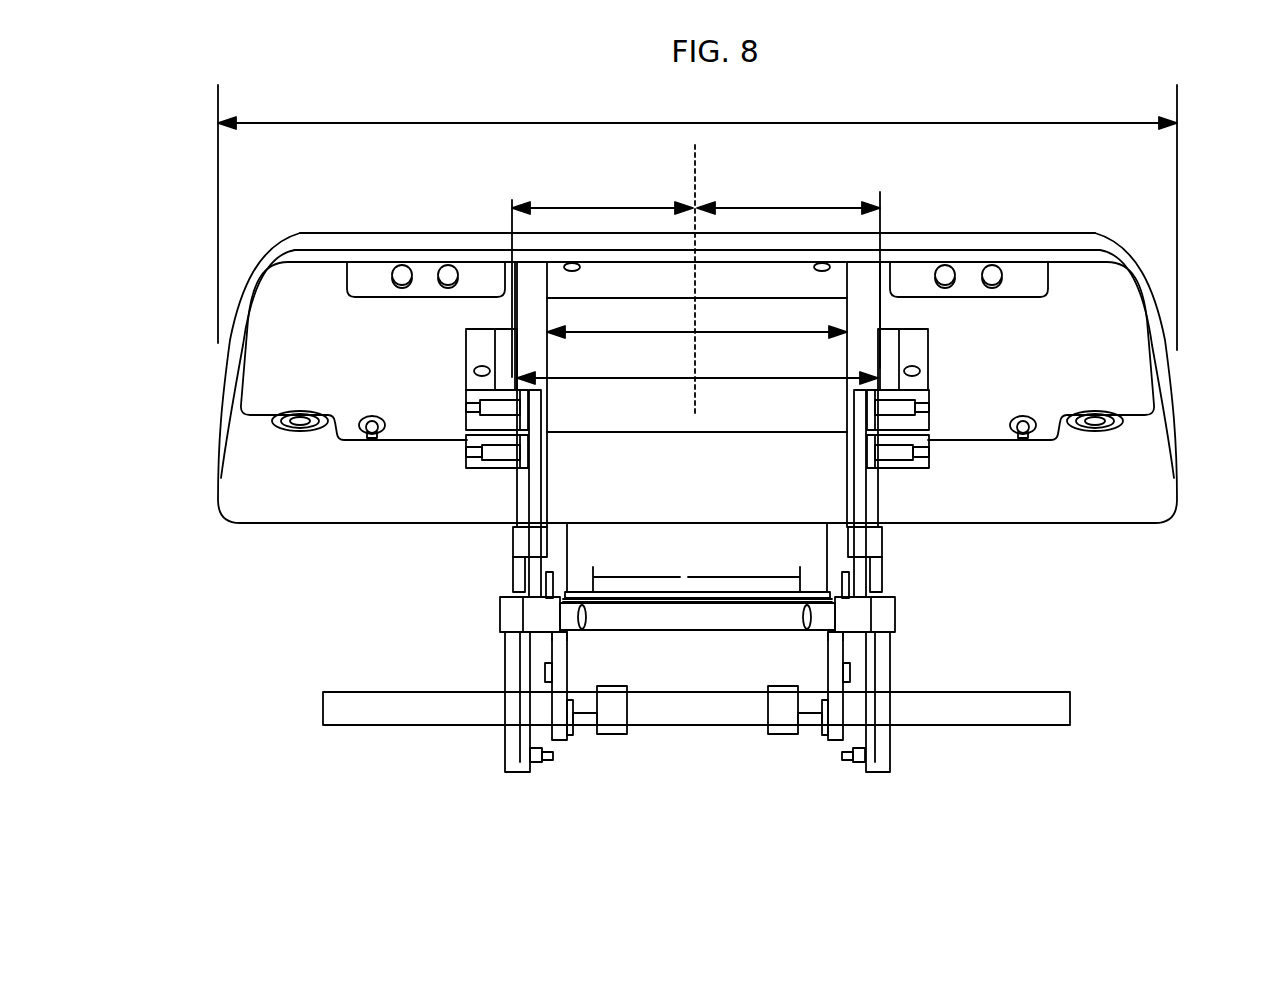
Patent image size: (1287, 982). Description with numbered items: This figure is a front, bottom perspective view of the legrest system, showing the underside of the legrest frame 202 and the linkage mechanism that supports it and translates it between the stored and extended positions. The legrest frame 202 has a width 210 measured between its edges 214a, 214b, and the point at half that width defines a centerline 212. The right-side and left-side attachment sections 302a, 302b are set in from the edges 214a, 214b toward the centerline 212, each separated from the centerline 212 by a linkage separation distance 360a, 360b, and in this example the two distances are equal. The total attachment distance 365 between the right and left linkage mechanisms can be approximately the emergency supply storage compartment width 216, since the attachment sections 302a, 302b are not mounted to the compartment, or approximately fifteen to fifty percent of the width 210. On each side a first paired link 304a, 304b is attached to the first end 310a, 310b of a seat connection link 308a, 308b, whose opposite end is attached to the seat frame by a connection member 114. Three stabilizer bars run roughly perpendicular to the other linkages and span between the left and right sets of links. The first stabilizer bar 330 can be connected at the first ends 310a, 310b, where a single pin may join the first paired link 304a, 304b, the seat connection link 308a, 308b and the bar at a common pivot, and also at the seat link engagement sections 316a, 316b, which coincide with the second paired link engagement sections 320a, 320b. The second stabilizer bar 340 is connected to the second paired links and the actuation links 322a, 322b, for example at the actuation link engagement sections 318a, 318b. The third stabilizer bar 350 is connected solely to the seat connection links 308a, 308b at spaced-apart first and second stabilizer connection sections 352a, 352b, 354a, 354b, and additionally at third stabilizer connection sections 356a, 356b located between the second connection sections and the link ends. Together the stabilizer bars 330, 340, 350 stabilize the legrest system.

The connection member 114 is at (1040, 713).
The legrest frame 202 is at (895, 233).
The width 210 is at (697, 217).
The centerline 212 is at (697, 172).
The edge 214a is at (218, 470).
The edge 214b is at (1178, 448).
The emergency supply storage compartment width 216 is at (697, 324).
The attachment section 302a is at (502, 340).
The attachment section 302b is at (892, 362).
The first paired link 304a is at (525, 490).
The first paired link 304b is at (867, 490).
The seat connection link 308a is at (560, 735).
The seat connection link 308b is at (835, 733).
The first end 310a is at (562, 523).
The first end 310b is at (843, 521).
The seat link engagement section 316a is at (513, 540).
The seat link engagement section 316b is at (880, 542).
The actuation link engagement section 318a is at (528, 612).
The actuation link engagement section 318b is at (862, 608).
The second paired link engagement section 320a is at (550, 580).
The second paired link engagement section 320b is at (847, 573).
The actuation link 322a is at (505, 647).
The actuation link 322b is at (890, 661).
The first stabilizer bar 330 is at (695, 545).
The second stabilizer bar 340 is at (818, 612).
The third stabilizer bar 350 is at (680, 668).
The first stabilizer connection section 352a is at (548, 635).
The first stabilizer connection section 352b is at (845, 633).
The second stabilizer connection section 354a is at (543, 673).
The second stabilizer connection section 354b is at (848, 675).
The third stabilizer connection section 356a is at (610, 725).
The third stabilizer connection section 356b is at (787, 730).
The linkage separation distance 360a is at (602, 280).
The linkage separation distance 360b is at (788, 275).
The total attachment distance 365 is at (697, 369).